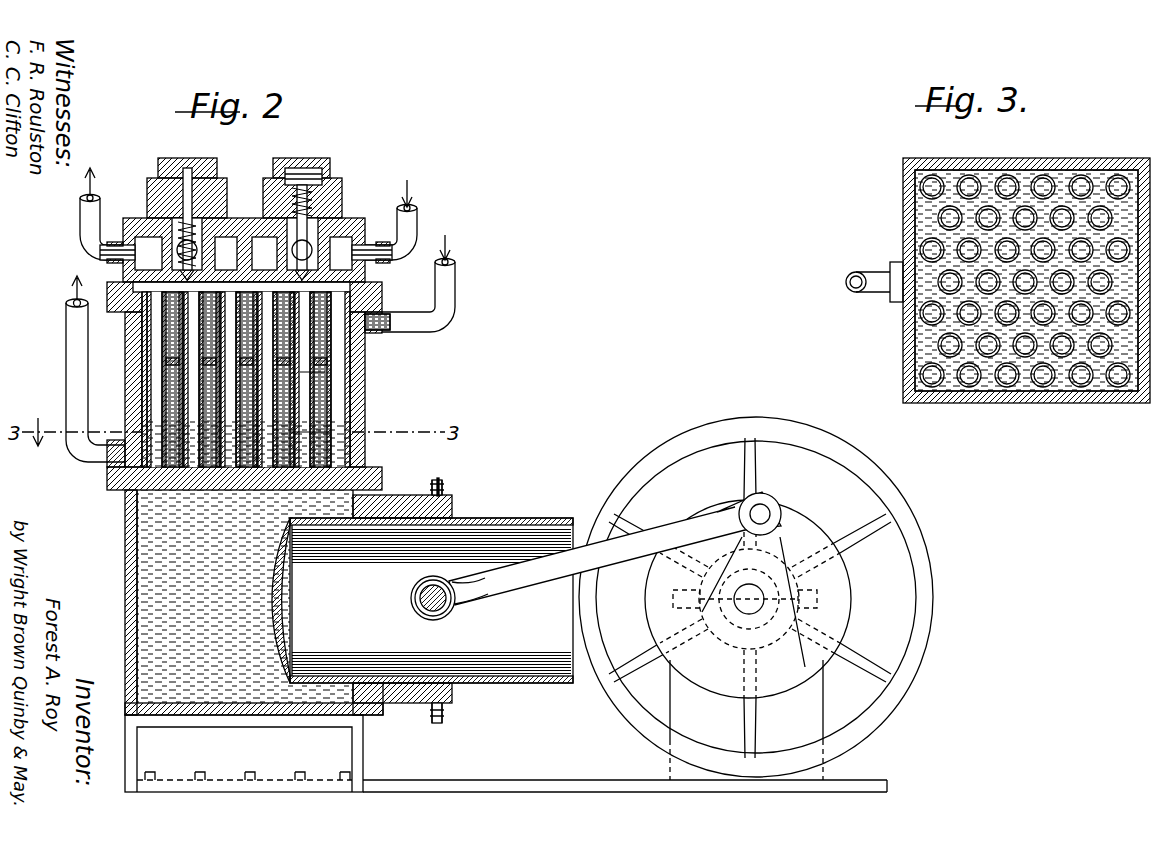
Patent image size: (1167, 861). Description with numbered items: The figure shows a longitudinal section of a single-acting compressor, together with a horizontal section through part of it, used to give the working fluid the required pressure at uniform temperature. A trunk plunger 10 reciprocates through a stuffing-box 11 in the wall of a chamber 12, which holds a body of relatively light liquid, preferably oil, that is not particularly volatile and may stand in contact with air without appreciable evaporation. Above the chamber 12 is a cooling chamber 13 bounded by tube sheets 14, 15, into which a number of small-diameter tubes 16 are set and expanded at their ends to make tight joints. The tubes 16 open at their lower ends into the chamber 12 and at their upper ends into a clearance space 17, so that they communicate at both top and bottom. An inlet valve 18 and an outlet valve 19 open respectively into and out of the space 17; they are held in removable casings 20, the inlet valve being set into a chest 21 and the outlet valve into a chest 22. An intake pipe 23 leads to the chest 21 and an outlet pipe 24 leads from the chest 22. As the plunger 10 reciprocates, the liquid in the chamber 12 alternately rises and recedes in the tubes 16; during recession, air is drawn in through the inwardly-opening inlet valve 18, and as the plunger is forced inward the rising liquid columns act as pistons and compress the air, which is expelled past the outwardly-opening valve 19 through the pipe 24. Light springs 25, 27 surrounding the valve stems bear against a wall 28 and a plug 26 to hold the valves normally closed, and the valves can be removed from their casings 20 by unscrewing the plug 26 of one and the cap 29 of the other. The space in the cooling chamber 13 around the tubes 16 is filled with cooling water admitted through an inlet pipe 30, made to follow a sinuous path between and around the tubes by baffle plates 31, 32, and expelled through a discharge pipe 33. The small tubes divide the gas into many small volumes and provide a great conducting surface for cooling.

In FIG. 2, the trunk plunger 10 is at (485, 530).
In FIG. 2, the stuffing-box 11 is at (400, 495).
In FIG. 2, the chamber 12 is at (125, 560).
In FIG. 2, the cooling chamber 13 is at (135, 360).
In FIG. 3, the cooling chamber 13 is at (915, 336).
In FIG. 2, the tube sheet 14 is at (137, 518).
In FIG. 2, the tube sheet 15 is at (382, 298).
In FIG. 2, the tubes 16 is at (335, 378).
In FIG. 3, the tubes 16 is at (1012, 397).
In FIG. 2, the clearance space 17 is at (227, 253).
In FIG. 2, the inlet valve 18 is at (340, 225).
In FIG. 2, the outlet valve 19 is at (150, 245).
In FIG. 2, the removable casings 20 is at (175, 240).
In FIG. 2, the chest 21 is at (342, 253).
In FIG. 2, the chest 22 is at (135, 264).
In FIG. 2, the intake pipe 23 is at (412, 231).
In FIG. 2, the outlet pipe 24 is at (80, 239).
In FIG. 2, the spring 25 is at (215, 222).
In FIG. 2, the plug 26 is at (172, 165).
In FIG. 2, the spring 27 is at (300, 168).
In FIG. 2, the wall 28 is at (264, 253).
In FIG. 2, the cap 29 is at (293, 168).
In FIG. 2, the inlet pipe 30 is at (452, 294).
In FIG. 2, the baffle plate 31 is at (330, 372).
In FIG. 2, the baffle plate 32 is at (330, 432).
In FIG. 2, the discharge pipe 33 is at (66, 342).
In FIG. 3, the discharge pipe 33 is at (859, 276).